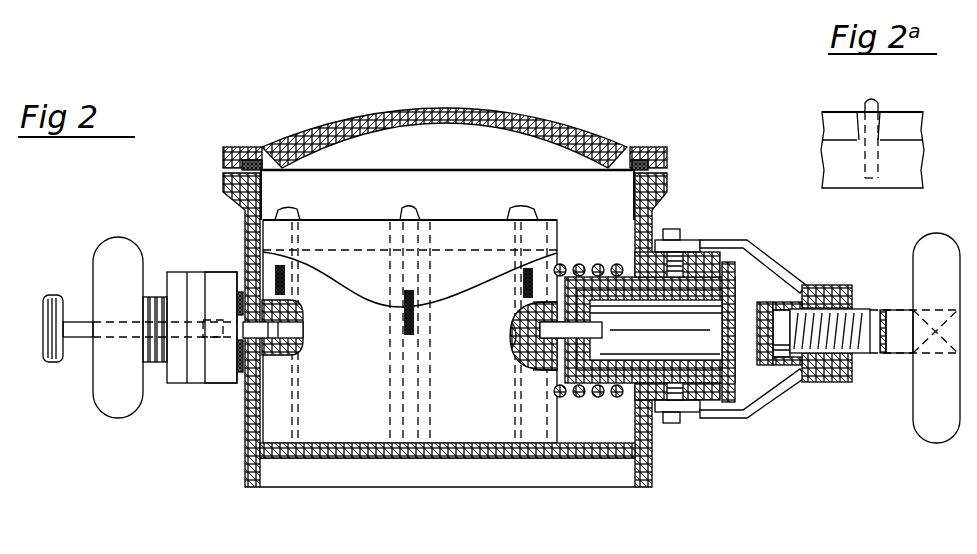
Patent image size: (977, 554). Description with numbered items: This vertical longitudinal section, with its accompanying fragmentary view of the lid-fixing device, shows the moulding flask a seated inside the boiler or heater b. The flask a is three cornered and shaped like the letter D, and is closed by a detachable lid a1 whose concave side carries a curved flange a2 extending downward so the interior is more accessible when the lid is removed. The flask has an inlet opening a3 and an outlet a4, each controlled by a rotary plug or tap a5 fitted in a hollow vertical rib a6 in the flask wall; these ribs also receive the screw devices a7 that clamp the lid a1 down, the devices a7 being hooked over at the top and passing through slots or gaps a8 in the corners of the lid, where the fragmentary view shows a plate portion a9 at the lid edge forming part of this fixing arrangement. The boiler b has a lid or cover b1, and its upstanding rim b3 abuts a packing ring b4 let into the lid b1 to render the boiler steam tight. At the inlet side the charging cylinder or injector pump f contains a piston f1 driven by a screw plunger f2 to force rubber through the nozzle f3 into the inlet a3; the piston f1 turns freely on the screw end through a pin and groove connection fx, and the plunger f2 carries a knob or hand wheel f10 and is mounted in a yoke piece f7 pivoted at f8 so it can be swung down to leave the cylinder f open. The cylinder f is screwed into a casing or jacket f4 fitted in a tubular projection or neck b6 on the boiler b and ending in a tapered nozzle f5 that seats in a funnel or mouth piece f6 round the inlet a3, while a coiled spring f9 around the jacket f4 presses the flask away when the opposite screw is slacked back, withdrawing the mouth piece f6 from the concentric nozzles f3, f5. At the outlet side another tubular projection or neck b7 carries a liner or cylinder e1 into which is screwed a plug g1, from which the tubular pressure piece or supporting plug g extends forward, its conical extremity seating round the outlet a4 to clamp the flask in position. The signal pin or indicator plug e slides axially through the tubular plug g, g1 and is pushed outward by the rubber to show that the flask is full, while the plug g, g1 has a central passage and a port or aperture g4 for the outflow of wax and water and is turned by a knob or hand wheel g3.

In FIG. 2, the moulding flask a is at (352, 440).
In FIG. 2A, the moulding flask a is at (922, 183).
In FIG. 2, the detachable lid a1 is at (350, 220).
In FIG. 2A, the detachable lid a1 is at (924, 134).
In FIG. 2, the curved flange a2 is at (380, 250).
In FIG. 2, the inlet opening a3 is at (510, 336).
In FIG. 2, the outlet a4 is at (304, 330).
In FIG. 2, the rotary plug or tap a5 is at (304, 348).
In FIG. 2, the hollow vertical rib a6 is at (299, 392).
In FIG. 2, the screw devices a7 is at (292, 210).
In FIG. 2A, the screw devices a7 is at (874, 100).
In FIG. 2A, the slots or gaps a8 is at (882, 112).
In FIG. 2A, the plate portion a9 is at (890, 132).
In FIG. 2, the boiler or heater b is at (243, 240).
In FIG. 2, the lid or cover b1 is at (388, 128).
In FIG. 2, the upstanding rim b3 is at (262, 182).
In FIG. 2, the packing ring b4 is at (251, 157).
In FIG. 2, the tubular projection or neck b6 is at (728, 410).
In FIG. 2, the tubular projection or neck b7 is at (214, 385).
In FIG. 2, the signal pin or indicator plug e is at (85, 320).
In FIG. 2, the liner or cylinder e1 is at (178, 385).
In FIG. 2, the charging cylinder or injector pump f is at (618, 368).
In FIG. 2, the piston f1 is at (758, 322).
In FIG. 2, the screw plunger f2 is at (868, 312).
In FIG. 2, the nozzle f3 is at (573, 333).
In FIG. 2, the casing or jacket f4 is at (607, 277).
In FIG. 2, the nozzle f5 is at (535, 303).
In FIG. 2, the funnel or mouth piece f6 is at (535, 366).
In FIG. 2, the yoke piece f7 is at (776, 270).
In FIG. 2, the pivot f8 is at (672, 240).
In FIG. 2, the coiled spring f9 is at (563, 264).
In FIG. 2, the knob or hand wheel f10 is at (916, 262).
In FIG. 2, the pin and groove connection fx is at (775, 338).
In FIG. 2, the tubular pressure piece or supporting plug g is at (240, 332).
In FIG. 2, the plug g1 is at (150, 298).
In FIG. 2, the knob or hand wheel g3 is at (95, 256).
In FIG. 2, the port or aperture g4 is at (210, 313).